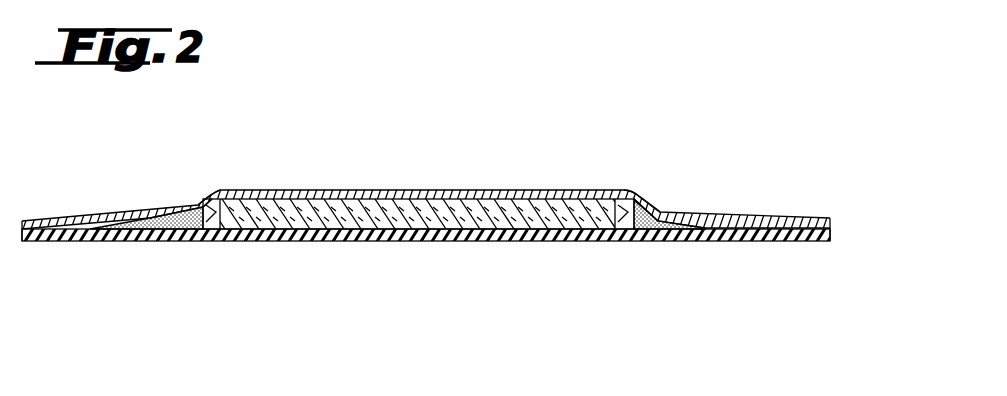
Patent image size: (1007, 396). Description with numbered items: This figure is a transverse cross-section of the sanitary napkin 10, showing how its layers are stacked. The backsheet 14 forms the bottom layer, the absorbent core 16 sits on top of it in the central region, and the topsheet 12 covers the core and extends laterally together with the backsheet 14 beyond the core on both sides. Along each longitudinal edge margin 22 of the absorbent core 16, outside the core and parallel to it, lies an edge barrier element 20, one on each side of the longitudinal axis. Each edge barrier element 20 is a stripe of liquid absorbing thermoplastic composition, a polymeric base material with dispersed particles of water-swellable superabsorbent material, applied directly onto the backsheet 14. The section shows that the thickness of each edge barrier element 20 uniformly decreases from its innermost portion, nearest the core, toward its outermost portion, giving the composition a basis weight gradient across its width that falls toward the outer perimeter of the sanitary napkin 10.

The sanitary napkin 10 is at (800, 163).
The topsheet 12 is at (477, 197).
The backsheet 14 is at (523, 233).
The absorbent core 16 is at (400, 213).
The edge barrier element 20 is at (150, 218).
The longitudinal edge margin 22 is at (197, 213).